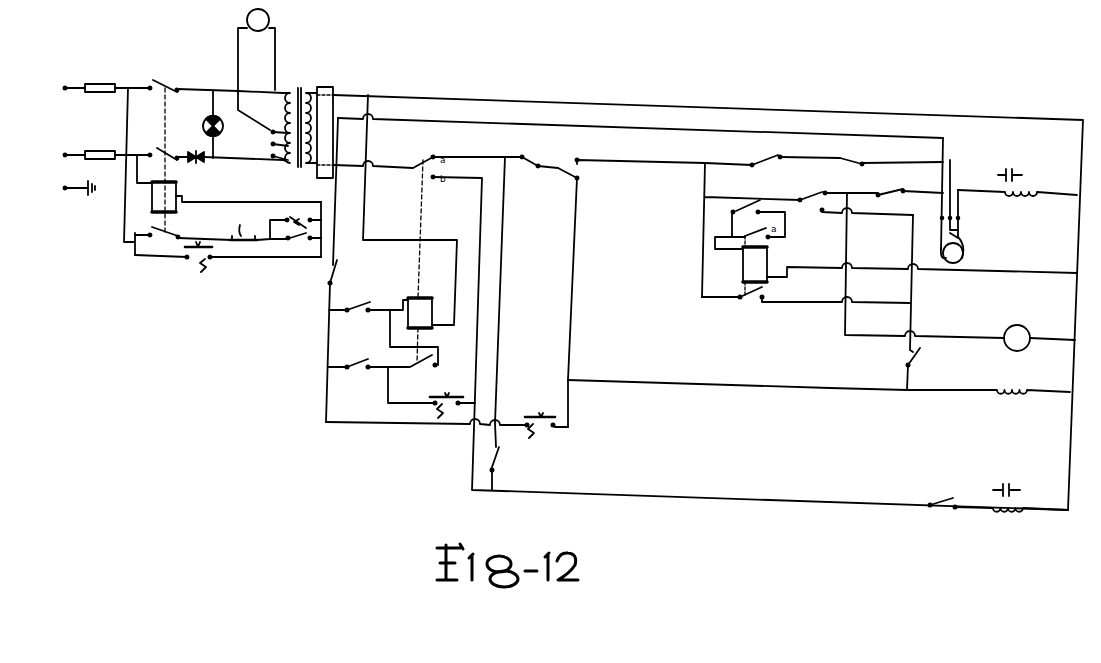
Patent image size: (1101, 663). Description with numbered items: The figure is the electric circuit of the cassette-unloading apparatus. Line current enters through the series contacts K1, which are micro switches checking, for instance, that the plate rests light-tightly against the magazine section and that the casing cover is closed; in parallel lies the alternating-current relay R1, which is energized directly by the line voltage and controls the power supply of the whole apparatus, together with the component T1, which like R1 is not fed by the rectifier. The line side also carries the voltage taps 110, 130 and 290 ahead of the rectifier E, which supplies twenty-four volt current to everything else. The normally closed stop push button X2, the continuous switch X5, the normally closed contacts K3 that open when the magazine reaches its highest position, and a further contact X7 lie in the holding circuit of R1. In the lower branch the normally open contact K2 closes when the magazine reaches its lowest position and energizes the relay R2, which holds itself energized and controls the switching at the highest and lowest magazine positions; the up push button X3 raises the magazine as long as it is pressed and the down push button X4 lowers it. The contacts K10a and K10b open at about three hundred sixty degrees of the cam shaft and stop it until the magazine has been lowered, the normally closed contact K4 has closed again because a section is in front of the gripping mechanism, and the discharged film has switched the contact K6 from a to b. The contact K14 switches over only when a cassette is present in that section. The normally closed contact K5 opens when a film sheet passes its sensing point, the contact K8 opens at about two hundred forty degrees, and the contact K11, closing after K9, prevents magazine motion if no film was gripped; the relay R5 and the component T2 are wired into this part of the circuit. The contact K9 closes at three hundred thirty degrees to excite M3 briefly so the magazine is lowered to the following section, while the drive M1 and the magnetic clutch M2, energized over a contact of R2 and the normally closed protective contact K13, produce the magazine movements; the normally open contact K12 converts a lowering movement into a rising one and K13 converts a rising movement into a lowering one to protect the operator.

The set of series contacts K1 is at (215, 157).
The alternating current relay R1 is at (229, 183).
The Stop push button X2 is at (243, 226).
The Continuous switch X5 is at (303, 218).
The highest-position contacts K3 is at (361, 307).
The push button X7 is at (253, 259).
The line-supplied component T1 is at (256, 69).
The 110 V tap 110 is at (266, 132).
The 130 V tap 130 is at (266, 145).
The 290 V tap 290 is at (265, 157).
The rectifier E is at (325, 132).
The contact K10 part b K10b is at (346, 341).
The lowest-position contact K2 is at (368, 312).
The magazine end-position relay R2 is at (420, 261).
The Up push button X3 is at (452, 406).
The section-position contact K4 is at (536, 165).
The cassette-presence contact K14 is at (631, 168).
The Down push button X4 is at (546, 427).
The operator protection contact K12 is at (506, 468).
The film-passage contact K5 is at (772, 157).
The contact K10 part a K10a is at (890, 169).
The film-discharge changeover contact K6 is at (854, 197).
The cam-shaft contact K8 is at (909, 188).
The film-gripping check contact K11 is at (750, 223).
The relay coil R5 is at (889, 269).
The lowering contact K9 is at (918, 302).
The timer T2 is at (1039, 338).
The magazine lowering drive M3 is at (819, 384).
The motor M1 is at (1017, 182).
The magnetic clutch M2 is at (1030, 498).
The operator protection contact K13 is at (957, 498).